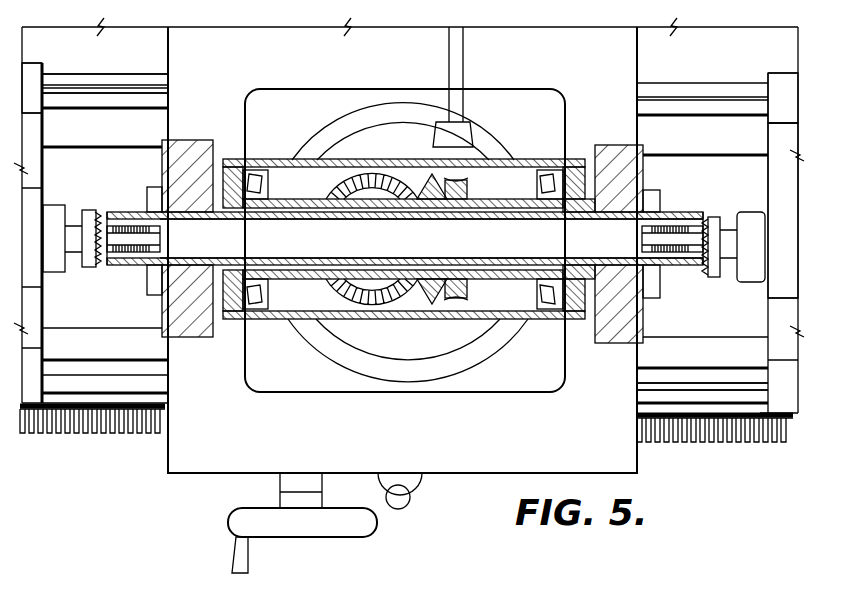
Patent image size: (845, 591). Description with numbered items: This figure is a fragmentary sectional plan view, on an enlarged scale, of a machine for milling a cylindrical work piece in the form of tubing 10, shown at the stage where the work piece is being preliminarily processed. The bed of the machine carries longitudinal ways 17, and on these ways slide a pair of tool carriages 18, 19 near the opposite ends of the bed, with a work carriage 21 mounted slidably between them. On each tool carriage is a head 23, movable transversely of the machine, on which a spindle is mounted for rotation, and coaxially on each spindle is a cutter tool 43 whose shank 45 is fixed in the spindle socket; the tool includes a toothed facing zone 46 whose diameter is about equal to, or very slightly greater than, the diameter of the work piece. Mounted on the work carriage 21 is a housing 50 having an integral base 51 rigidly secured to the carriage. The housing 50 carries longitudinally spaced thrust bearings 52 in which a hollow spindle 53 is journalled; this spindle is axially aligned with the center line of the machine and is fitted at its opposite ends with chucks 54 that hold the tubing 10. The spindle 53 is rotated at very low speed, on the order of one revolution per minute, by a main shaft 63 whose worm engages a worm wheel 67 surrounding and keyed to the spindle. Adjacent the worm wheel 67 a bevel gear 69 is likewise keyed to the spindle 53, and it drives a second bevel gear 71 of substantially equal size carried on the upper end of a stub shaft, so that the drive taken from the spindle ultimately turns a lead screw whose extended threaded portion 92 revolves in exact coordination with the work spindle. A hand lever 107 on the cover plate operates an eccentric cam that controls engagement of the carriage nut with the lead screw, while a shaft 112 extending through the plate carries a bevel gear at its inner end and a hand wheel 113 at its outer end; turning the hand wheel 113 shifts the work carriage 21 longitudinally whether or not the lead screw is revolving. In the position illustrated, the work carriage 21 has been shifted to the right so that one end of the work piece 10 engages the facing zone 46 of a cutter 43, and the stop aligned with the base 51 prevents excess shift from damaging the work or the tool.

The tubing 10 is at (482, 227).
The ways 17 is at (125, 80).
The tool carriage 18 is at (778, 80).
The tool carriage 19 is at (32, 77).
The work carriage 21 is at (610, 460).
The head 23 is at (43, 197).
The cutter tool 43 is at (168, 237).
The shank 45 is at (70, 226).
The facing zone 46 is at (97, 265).
The housing 50 is at (365, 160).
The base 51 is at (310, 100).
The thrust bearings 52 is at (268, 182).
The hollow spindle 53 is at (520, 290).
The chucks 54 is at (162, 307).
The main shaft 63 is at (457, 67).
The worm wheel 67 is at (468, 182).
The bevel gear 69 is at (420, 313).
The second bevel gear 71 is at (333, 287).
The extended threaded portion 92 is at (138, 435).
The hand lever 107 is at (410, 500).
The shaft 112 is at (300, 483).
The hand wheel 113 is at (288, 530).